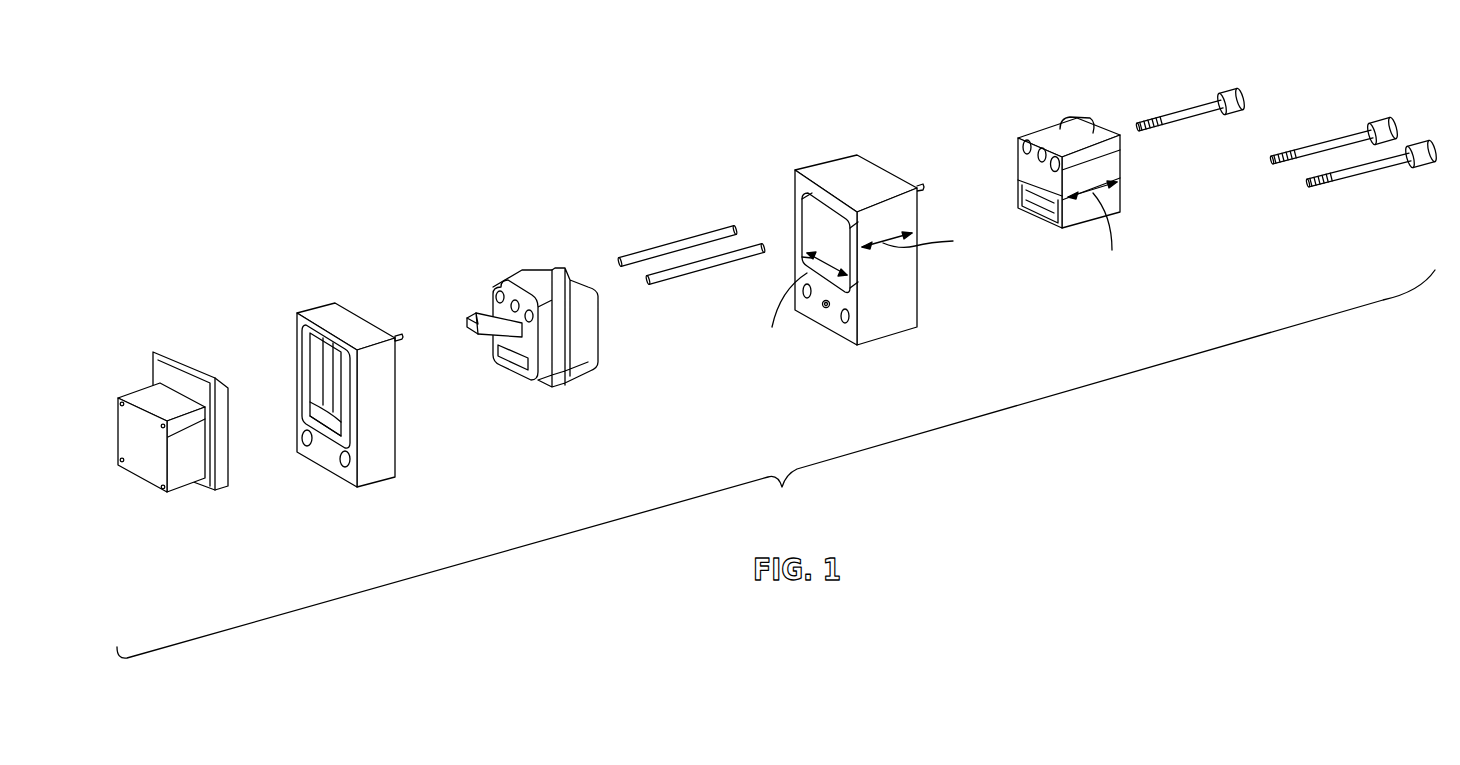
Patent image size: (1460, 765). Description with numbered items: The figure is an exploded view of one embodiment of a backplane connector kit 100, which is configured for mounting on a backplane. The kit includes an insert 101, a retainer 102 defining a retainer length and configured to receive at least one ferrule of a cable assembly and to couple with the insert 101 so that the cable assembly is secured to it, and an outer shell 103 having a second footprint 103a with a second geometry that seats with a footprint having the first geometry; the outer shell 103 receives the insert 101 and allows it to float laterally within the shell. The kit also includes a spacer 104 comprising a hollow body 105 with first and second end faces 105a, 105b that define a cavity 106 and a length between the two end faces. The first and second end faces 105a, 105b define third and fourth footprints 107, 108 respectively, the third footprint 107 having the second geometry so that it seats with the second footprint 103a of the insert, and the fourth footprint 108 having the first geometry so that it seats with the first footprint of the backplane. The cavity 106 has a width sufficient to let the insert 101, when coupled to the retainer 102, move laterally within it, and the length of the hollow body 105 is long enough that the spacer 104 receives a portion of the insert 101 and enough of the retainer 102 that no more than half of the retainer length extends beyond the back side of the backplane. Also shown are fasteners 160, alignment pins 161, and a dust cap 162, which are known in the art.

The backplane connector kit 100 is at (722, 102).
The insert 101 is at (512, 277).
The retainer 102 is at (1055, 130).
The outer shell 103 is at (383, 460).
The second footprint 103a is at (394, 331).
The spacer 104 is at (825, 158).
The hollow body 105 is at (907, 308).
The first end face 105a is at (917, 287).
The second end face 105b is at (840, 330).
The cavity 106 is at (815, 225).
The third footprint 107 is at (976, 266).
The fourth footprint 108 is at (817, 292).
The fasteners 160 is at (1180, 118).
The alignment pins 161 is at (643, 255).
The dust cap 162 is at (180, 490).